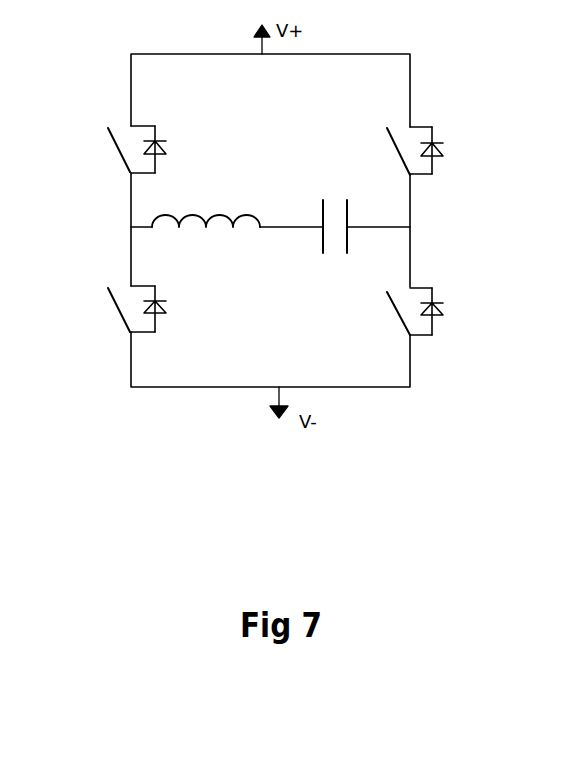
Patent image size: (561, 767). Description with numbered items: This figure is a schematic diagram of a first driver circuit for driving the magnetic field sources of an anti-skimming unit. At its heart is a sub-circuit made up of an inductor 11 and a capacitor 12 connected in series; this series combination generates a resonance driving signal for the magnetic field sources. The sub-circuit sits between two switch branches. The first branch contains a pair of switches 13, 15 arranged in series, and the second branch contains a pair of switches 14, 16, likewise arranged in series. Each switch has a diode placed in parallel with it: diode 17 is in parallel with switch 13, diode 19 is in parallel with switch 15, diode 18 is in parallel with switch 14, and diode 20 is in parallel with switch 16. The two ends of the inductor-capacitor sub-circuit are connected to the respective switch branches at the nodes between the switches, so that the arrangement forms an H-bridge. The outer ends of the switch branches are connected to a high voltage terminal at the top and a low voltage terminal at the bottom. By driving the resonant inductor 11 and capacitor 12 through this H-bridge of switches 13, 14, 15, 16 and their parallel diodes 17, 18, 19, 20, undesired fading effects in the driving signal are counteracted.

The inductor 11 is at (183, 233).
The capacitor 12 is at (317, 212).
The switch 13 is at (122, 143).
The switch 14 is at (440, 130).
The switch 15 is at (117, 315).
The switch 16 is at (393, 310).
The diode 17 is at (160, 157).
The diode 18 is at (440, 157).
The diode 19 is at (160, 315).
The diode 20 is at (433, 320).